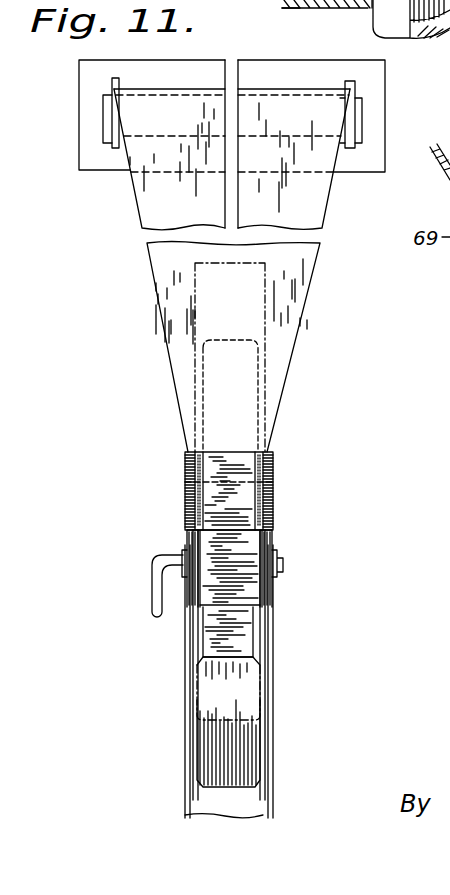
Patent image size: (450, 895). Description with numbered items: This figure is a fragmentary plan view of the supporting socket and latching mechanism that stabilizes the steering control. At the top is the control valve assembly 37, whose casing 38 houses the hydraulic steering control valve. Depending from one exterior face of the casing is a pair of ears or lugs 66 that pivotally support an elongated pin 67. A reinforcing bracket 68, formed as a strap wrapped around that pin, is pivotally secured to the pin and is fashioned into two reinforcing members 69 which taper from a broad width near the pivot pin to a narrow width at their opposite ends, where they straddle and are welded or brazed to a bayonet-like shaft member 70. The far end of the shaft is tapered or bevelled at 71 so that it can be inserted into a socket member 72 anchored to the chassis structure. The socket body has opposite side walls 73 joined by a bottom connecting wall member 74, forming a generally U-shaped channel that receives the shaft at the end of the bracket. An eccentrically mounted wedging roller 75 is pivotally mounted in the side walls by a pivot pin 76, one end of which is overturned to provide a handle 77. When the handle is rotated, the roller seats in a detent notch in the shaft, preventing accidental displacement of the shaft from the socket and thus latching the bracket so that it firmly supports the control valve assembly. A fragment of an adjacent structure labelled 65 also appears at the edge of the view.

The control valve assembly 37 is at (260, 51).
The casing 38 is at (303, 70).
The support member 65 is at (353, 0).
The ears or lugs 66 is at (113, 85).
The elongated pin 67 is at (363, 117).
The reinforcing bracket 68 is at (137, 203).
The reinforcing members 69 is at (313, 207).
The bayonet-like shaft member 70 is at (237, 625).
The tapered or bevelled end 71 is at (243, 733).
The socket member 72 is at (277, 748).
The side walls 73 is at (185, 722).
The bottom connecting wall member 74 is at (250, 805).
The wedging roller 75 is at (245, 552).
The pivot pin 76 is at (283, 565).
The handle 77 is at (152, 596).